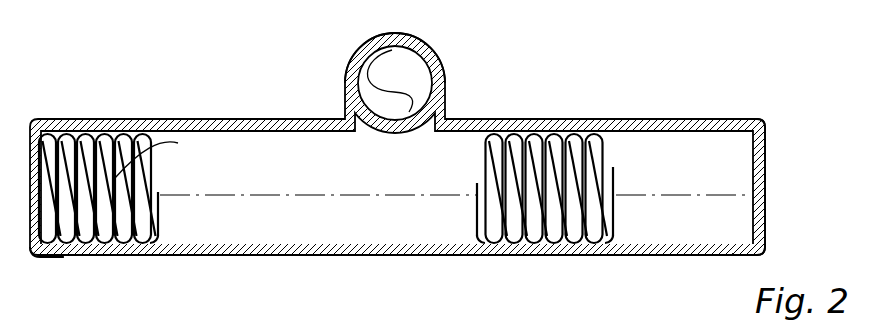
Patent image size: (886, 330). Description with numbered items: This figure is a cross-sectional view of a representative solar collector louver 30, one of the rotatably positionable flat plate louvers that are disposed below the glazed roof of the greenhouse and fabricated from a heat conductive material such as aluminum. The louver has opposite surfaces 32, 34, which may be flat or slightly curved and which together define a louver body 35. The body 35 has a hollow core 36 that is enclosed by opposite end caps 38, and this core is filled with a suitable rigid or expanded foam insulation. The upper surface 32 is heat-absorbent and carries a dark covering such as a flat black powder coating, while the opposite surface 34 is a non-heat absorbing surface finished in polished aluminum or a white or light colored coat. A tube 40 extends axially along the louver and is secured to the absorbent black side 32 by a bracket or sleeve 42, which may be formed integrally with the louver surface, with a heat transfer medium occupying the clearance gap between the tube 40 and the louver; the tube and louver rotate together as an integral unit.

The solar collector louver 30 is at (184, 97).
The heat-absorbent surface 32 is at (483, 118).
The non-heat absorbing surface 34 is at (580, 255).
The louver body 35 is at (115, 259).
The hollow core 36 is at (407, 171).
The end cap 38 is at (766, 168).
The tube 40 is at (403, 72).
The bracket or sleeve 42 is at (372, 42).